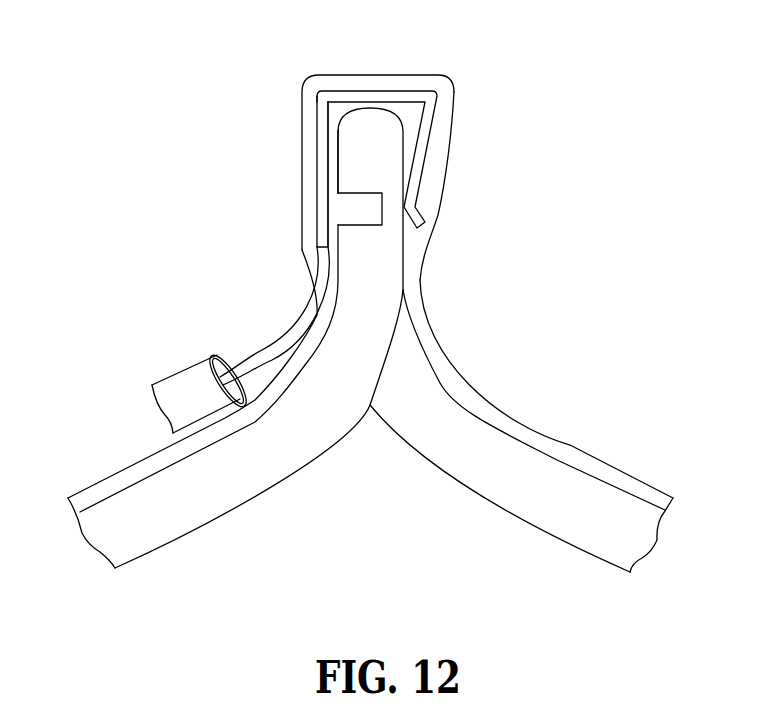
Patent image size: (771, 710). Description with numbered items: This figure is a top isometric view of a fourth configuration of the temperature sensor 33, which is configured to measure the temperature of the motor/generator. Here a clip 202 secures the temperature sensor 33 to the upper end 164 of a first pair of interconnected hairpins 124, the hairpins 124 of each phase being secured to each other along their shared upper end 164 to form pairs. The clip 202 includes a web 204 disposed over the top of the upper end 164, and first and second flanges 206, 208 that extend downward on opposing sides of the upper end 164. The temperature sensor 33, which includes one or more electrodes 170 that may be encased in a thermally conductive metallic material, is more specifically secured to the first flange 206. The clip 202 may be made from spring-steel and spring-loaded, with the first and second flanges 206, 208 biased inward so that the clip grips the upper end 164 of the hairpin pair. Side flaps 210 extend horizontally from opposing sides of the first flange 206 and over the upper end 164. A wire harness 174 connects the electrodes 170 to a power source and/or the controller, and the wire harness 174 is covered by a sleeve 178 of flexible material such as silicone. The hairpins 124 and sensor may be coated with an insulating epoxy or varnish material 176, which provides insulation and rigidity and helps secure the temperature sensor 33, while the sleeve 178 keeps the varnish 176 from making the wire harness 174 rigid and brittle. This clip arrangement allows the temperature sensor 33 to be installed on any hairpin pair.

The clip 202 is at (360, 78).
The web 204 is at (403, 88).
The first flange 206 is at (315, 122).
The second flange 208 is at (443, 110).
The temperature sensor 33 is at (251, 174).
The electrodes 170 is at (338, 172).
The upper end 164 is at (372, 157).
The side flaps 210 is at (360, 215).
The wire harness 174 is at (283, 338).
The sleeve 178 is at (183, 373).
The interconnected hairpins 124 is at (138, 487).
The insulating epoxy or varnish material 176 is at (628, 475).